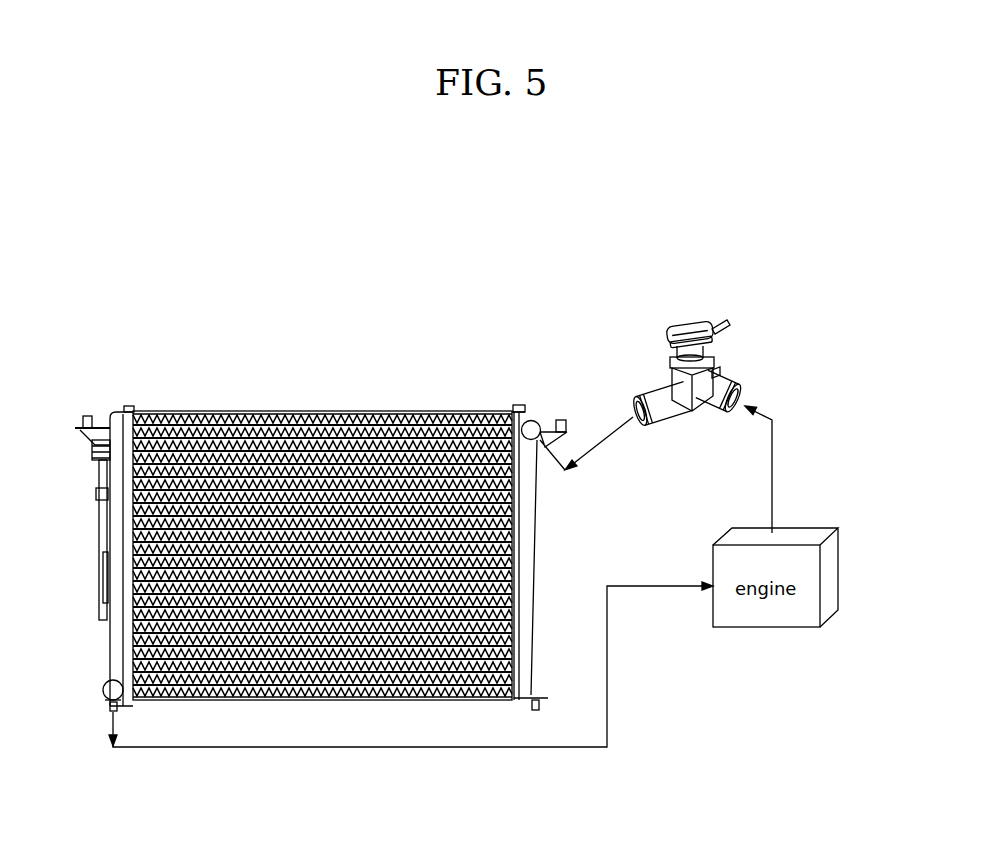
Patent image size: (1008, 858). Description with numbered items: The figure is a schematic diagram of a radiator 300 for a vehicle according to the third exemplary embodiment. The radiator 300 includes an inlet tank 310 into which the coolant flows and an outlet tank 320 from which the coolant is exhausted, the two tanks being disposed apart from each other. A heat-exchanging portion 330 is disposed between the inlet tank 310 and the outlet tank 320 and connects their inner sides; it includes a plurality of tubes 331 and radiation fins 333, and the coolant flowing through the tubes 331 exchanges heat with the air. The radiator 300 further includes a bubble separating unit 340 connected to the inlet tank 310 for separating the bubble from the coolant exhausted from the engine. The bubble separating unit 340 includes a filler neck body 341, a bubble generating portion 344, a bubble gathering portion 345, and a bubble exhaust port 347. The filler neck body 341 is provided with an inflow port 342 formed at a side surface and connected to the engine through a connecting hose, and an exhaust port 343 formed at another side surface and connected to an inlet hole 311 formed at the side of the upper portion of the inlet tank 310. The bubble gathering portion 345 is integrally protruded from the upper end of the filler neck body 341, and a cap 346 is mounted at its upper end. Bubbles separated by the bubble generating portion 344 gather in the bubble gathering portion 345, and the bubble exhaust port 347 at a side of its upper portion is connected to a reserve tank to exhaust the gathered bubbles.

The radiator 300 is at (425, 283).
The inlet tank 310 is at (533, 537).
The inlet hole 311 is at (527, 421).
The outlet tank 320 is at (124, 530).
The heat-exchanging portion 330 is at (322, 340).
The tubes 331 is at (255, 413).
The radiation fins 333 is at (309, 413).
The bubble separating unit 340 is at (700, 300).
The filler neck body 341 is at (695, 404).
The inflow port 342 is at (718, 374).
The exhaust port 343 is at (663, 418).
The bubble generating portion 344 is at (742, 396).
The bubble gathering portion 345 is at (670, 366).
The cap 346 is at (676, 327).
The bubble exhaust port 347 is at (720, 323).